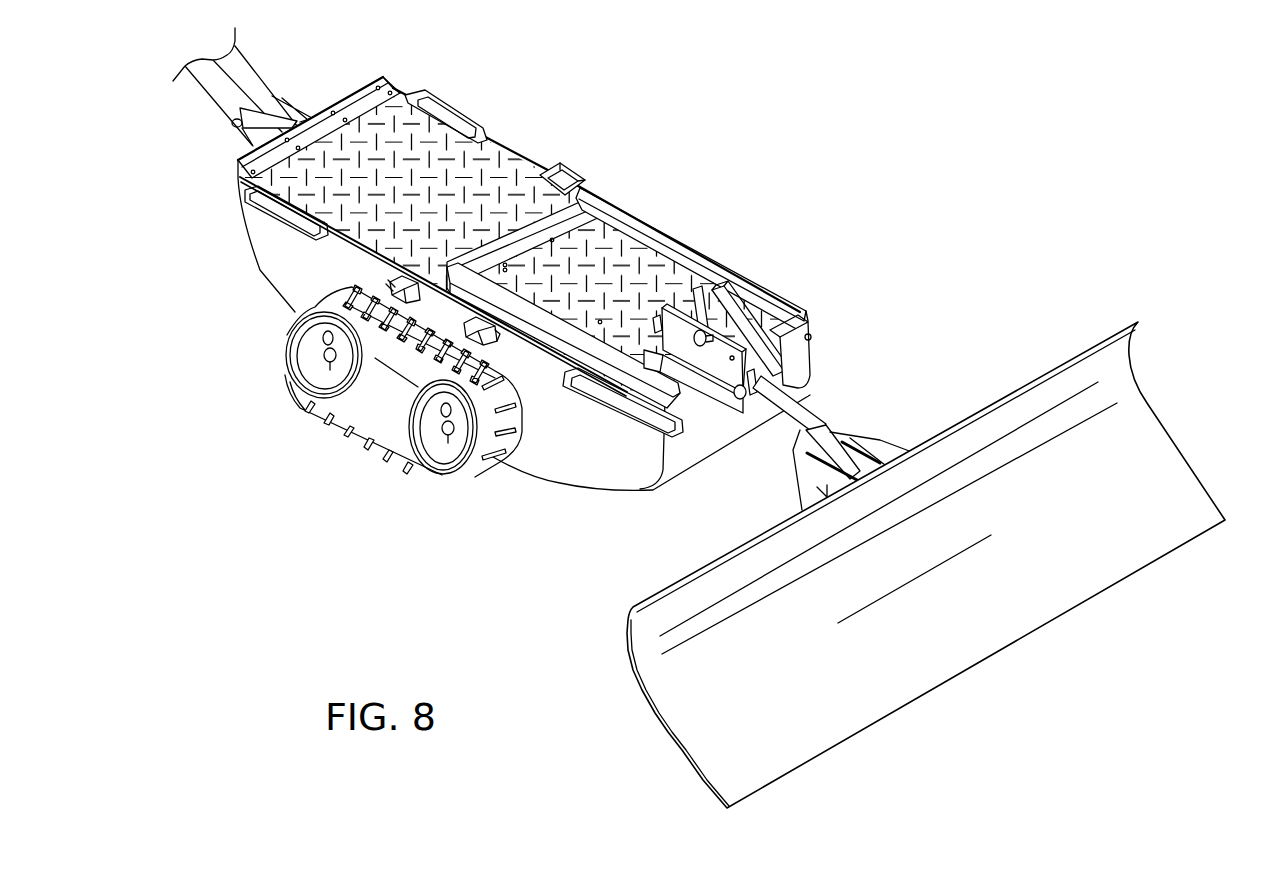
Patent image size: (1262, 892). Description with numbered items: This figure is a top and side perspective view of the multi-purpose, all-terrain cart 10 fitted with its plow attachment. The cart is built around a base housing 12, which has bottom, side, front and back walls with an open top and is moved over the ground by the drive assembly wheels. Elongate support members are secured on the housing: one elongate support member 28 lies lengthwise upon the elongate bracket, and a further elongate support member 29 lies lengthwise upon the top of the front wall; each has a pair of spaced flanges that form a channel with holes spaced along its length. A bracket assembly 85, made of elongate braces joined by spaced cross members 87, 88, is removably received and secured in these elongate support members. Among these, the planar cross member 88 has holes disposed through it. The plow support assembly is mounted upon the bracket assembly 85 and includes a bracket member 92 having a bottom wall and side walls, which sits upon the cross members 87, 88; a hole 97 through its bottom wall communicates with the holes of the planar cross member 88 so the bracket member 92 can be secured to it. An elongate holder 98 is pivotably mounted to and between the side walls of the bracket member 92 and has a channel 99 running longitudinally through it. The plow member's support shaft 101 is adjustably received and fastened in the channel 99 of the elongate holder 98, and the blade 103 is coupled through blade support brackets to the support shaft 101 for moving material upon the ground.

The robotic vehicle 10 is at (886, 236).
The base housing 12 is at (547, 470).
The elongate support member 28 is at (592, 229).
The elongate support member 29 is at (706, 398).
The bracket assembly 85 is at (638, 211).
The cross member 87 is at (560, 175).
The planar cross member 88 is at (637, 360).
The bracket member 92 is at (702, 440).
The hole 97 is at (649, 318).
The elongate holder 98 is at (728, 310).
The channel 99 is at (741, 395).
The support shaft 101 is at (810, 405).
The blade 103 is at (972, 645).